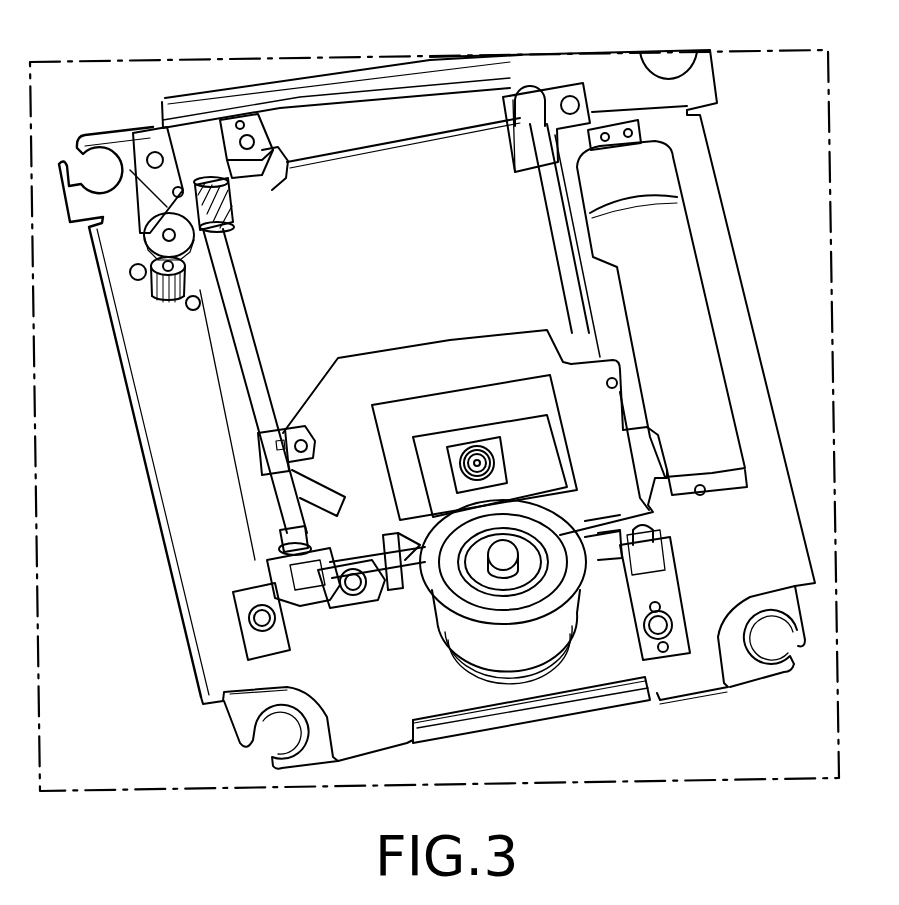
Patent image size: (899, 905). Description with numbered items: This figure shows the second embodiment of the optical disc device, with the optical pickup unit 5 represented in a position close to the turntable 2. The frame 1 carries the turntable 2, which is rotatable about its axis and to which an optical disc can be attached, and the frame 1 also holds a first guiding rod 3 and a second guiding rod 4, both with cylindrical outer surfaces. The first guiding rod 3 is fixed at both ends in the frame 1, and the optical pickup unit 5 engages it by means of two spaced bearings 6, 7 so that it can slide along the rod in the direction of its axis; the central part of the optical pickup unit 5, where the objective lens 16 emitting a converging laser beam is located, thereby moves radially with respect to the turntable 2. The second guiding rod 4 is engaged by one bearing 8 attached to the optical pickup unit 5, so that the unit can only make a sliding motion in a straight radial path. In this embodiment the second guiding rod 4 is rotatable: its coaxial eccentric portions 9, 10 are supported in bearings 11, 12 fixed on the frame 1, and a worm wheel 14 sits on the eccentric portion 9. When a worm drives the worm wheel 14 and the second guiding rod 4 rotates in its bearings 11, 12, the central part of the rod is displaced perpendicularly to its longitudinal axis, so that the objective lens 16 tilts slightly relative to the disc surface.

The frame 1 is at (190, 497).
The turntable 2 is at (525, 515).
The first guiding rod 3 is at (560, 226).
The second guiding rod 4 is at (240, 306).
The optical pickup unit 5 is at (408, 365).
The bearing 6 is at (655, 520).
The bearing 7 is at (612, 372).
The bearing 8 is at (268, 449).
The eccentric portion 9 is at (193, 140).
The eccentric portion 10 is at (305, 588).
The bearing 11 is at (227, 143).
The bearing 12 is at (300, 575).
The worm wheel 14 is at (235, 205).
The objective lens 16 is at (477, 455).